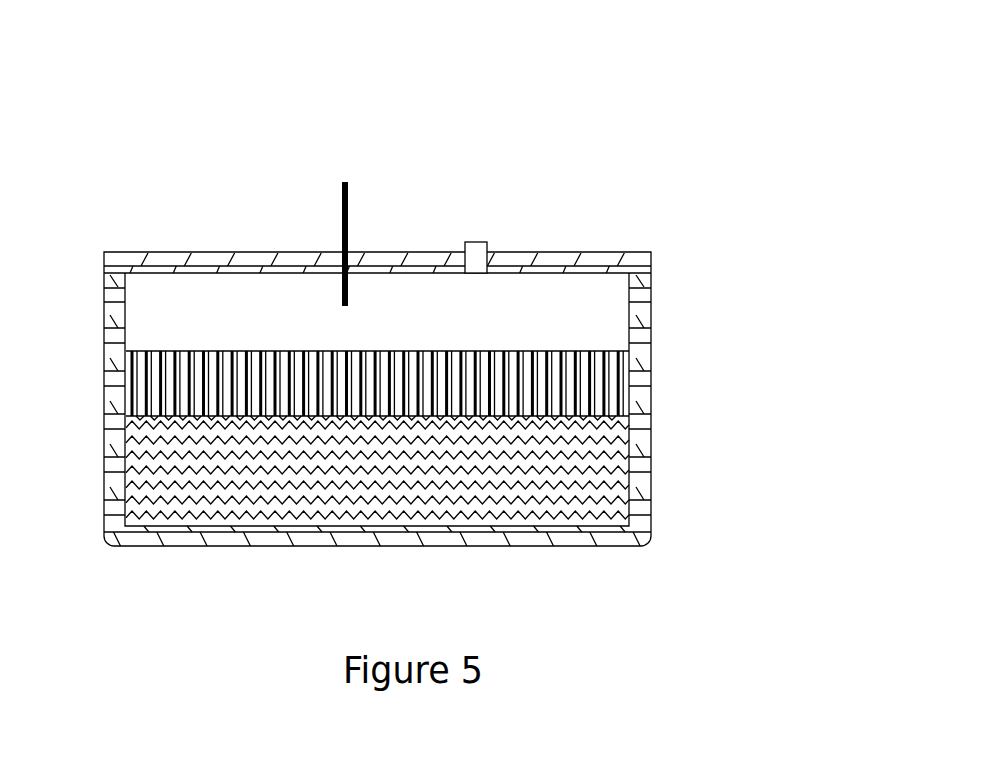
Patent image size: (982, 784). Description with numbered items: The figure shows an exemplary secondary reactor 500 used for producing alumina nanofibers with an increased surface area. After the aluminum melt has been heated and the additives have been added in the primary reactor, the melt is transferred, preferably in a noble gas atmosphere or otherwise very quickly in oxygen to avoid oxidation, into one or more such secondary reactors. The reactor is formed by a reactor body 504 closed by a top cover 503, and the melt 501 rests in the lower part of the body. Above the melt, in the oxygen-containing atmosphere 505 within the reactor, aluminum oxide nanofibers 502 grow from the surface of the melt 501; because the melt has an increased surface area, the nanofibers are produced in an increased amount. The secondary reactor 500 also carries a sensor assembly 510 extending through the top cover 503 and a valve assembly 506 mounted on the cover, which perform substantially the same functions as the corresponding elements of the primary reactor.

The secondary reactor 500 is at (565, 120).
The melt 501 is at (609, 486).
The aluminum oxide nanofibers 502 is at (610, 380).
The top cover 503 is at (175, 258).
The reactor body 504 is at (113, 545).
The oxygen-containing atmosphere 505 is at (563, 295).
The valve assembly 506 is at (478, 240).
The sensor assembly 510 is at (348, 183).